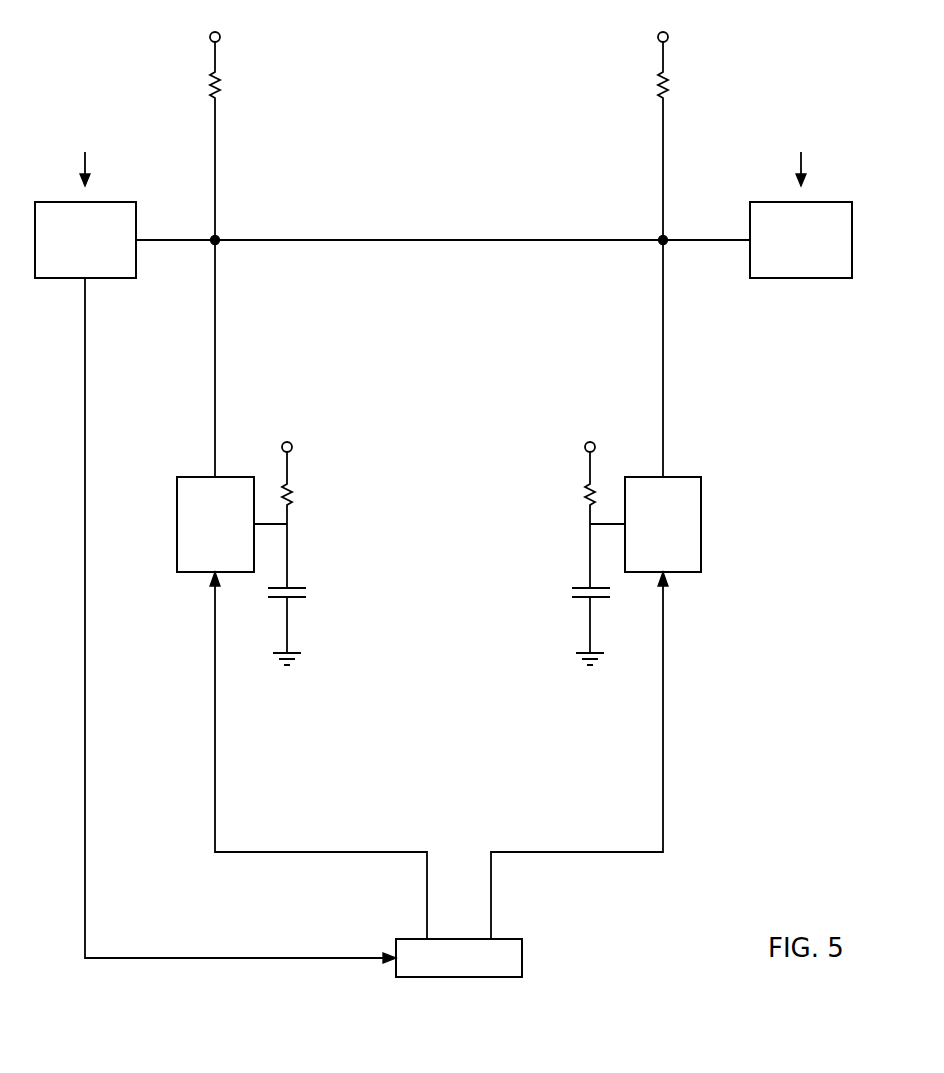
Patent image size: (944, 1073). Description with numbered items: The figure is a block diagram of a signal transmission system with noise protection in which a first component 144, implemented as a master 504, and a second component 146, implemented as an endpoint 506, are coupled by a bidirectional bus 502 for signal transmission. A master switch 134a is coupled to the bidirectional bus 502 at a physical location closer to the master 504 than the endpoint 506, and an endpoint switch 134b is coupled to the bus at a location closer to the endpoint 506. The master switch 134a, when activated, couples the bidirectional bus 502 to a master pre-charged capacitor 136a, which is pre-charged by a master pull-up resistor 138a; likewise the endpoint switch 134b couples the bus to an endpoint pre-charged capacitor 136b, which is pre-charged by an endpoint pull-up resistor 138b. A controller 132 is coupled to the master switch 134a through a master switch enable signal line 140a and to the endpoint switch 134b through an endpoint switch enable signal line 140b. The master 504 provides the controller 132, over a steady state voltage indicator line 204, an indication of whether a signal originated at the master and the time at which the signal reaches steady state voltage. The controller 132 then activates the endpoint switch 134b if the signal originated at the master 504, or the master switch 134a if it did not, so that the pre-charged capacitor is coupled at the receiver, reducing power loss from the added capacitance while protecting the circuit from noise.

The controller 132 is at (459, 958).
The master switch 134a is at (232, 524).
The endpoint switch 134b is at (645, 524).
The master pre-charged capacitor 136a is at (327, 614).
The endpoint pre-charged capacitor 136b is at (554, 614).
The master pull-up resistor 138a is at (347, 503).
The endpoint pull-up resistor 138b is at (534, 503).
The master switch enable signal line 140a is at (318, 755).
The endpoint switch enable signal line 140b is at (579, 755).
The first component 144 is at (85, 240).
The second component 146 is at (801, 240).
The steady state voltage indicator line 204 is at (240, 620).
The bidirectional bus 502 is at (443, 266).
The master 504 is at (85, 145).
The endpoint 506 is at (801, 145).